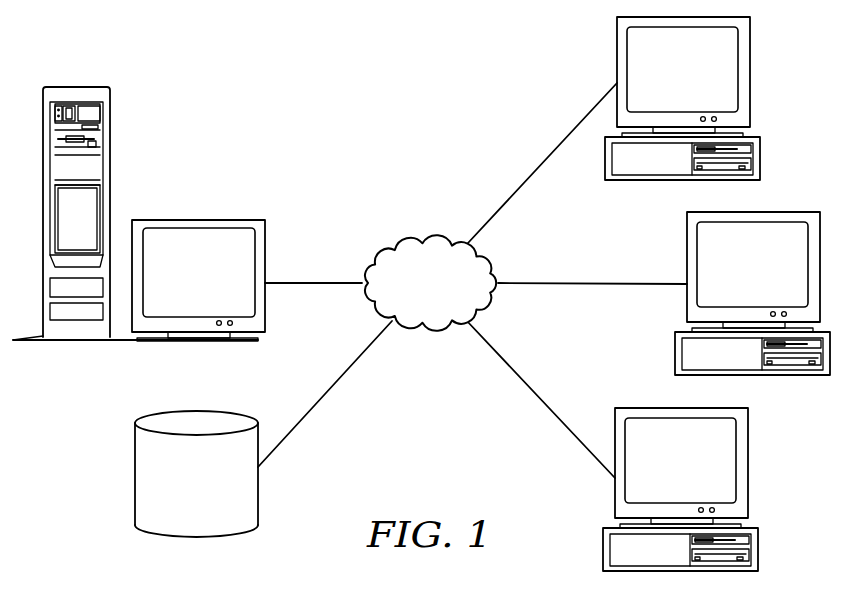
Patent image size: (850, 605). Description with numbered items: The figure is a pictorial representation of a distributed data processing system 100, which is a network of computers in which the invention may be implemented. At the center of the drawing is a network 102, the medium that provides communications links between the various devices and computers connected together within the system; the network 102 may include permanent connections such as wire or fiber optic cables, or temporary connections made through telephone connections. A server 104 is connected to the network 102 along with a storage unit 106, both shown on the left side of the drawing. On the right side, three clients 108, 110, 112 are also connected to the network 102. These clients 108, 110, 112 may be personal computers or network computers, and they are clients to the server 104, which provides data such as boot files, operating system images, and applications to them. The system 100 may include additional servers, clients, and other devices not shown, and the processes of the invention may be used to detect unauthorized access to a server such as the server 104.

The distributed data processing system 100 is at (308, 89).
The network 102 is at (448, 293).
The server 104 is at (217, 283).
The storage unit 106 is at (217, 491).
The client 108 is at (702, 83).
The client 110 is at (772, 280).
The client 112 is at (700, 476).